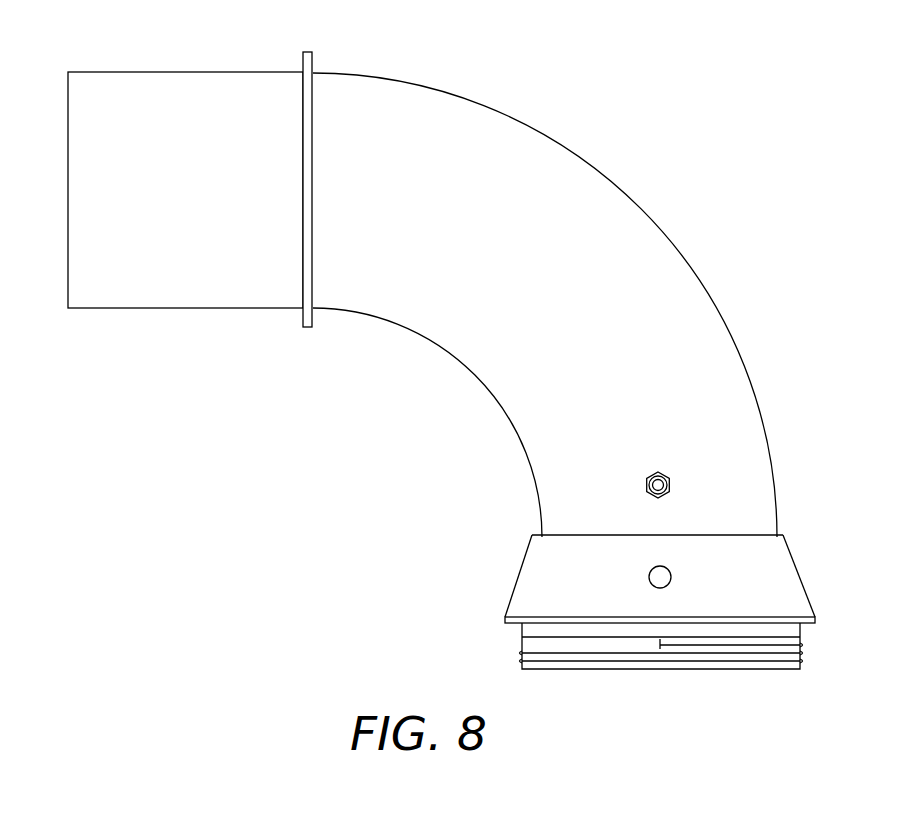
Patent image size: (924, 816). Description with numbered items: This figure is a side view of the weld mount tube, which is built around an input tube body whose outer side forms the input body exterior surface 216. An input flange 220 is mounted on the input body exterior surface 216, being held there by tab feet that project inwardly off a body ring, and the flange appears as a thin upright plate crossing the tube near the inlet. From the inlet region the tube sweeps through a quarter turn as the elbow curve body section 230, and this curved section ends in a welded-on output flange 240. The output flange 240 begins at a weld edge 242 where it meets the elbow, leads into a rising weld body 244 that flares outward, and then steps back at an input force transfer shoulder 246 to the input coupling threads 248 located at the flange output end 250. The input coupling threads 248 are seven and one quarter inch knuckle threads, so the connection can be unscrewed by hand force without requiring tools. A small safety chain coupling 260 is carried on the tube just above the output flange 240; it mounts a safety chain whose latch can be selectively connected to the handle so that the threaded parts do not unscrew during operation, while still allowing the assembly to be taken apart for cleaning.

The input body exterior surface 216 is at (226, 312).
The input flange 220 is at (307, 333).
The elbow curve body section 230 is at (466, 374).
The output flange 240 is at (658, 617).
The weld edge 242 is at (783, 535).
The rising weld body 244 is at (800, 568).
The input force transfer shoulder 246 is at (808, 623).
The input coupling threads 248 is at (800, 670).
The flange output end 250 is at (644, 670).
The safety chain coupling 260 is at (643, 493).